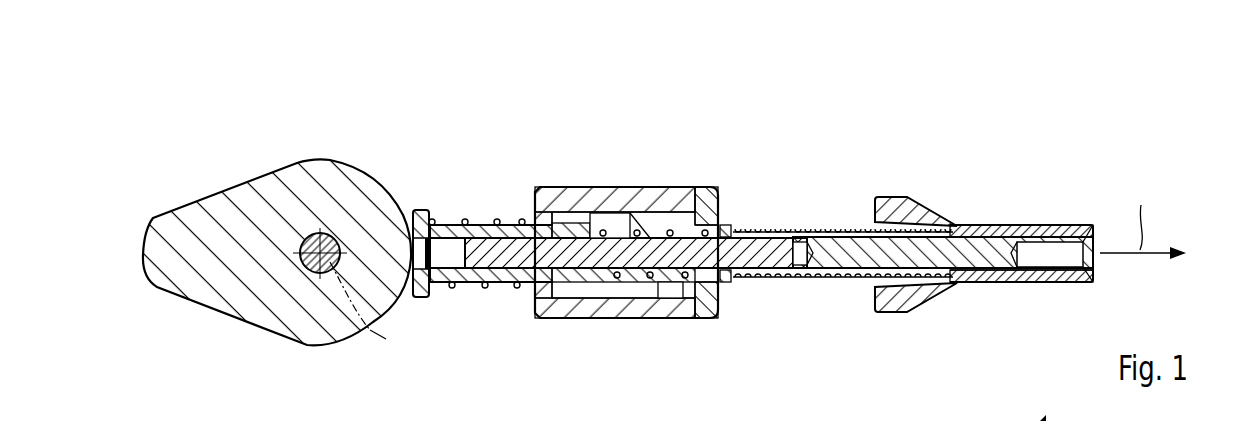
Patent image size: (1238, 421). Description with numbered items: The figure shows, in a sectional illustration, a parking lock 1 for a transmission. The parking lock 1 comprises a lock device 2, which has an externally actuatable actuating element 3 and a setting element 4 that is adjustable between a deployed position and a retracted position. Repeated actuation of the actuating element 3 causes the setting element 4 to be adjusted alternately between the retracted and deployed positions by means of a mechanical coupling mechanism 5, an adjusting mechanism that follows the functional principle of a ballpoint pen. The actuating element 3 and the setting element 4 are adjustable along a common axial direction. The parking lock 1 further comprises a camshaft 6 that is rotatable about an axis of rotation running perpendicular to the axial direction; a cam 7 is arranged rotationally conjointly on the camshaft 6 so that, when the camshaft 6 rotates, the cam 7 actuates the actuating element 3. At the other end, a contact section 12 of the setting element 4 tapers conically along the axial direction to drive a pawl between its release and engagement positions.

The parking lock 1 is at (1154, 157).
The lock device 2 is at (720, 128).
The actuating element 3 is at (481, 218).
The setting element 4 is at (827, 218).
The mechanical coupling mechanism 5 is at (649, 184).
The camshaft 6 is at (333, 239).
The cam 7 is at (323, 177).
The contact section 12 is at (913, 197).